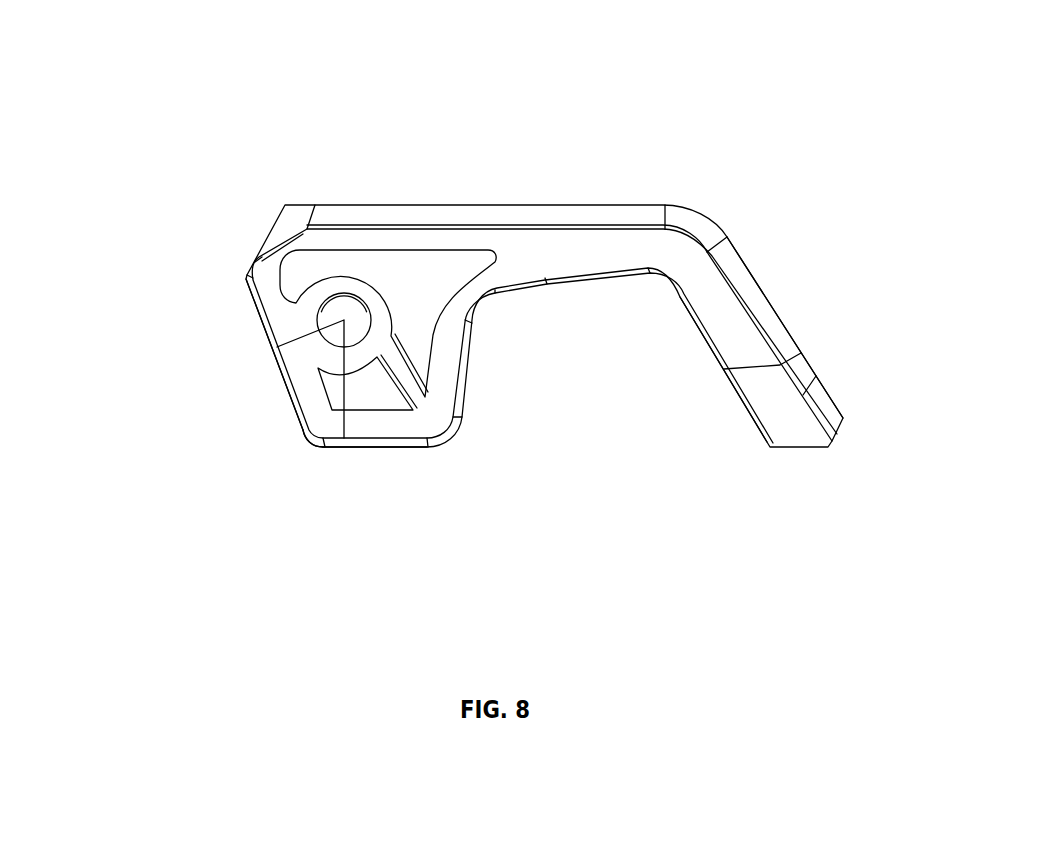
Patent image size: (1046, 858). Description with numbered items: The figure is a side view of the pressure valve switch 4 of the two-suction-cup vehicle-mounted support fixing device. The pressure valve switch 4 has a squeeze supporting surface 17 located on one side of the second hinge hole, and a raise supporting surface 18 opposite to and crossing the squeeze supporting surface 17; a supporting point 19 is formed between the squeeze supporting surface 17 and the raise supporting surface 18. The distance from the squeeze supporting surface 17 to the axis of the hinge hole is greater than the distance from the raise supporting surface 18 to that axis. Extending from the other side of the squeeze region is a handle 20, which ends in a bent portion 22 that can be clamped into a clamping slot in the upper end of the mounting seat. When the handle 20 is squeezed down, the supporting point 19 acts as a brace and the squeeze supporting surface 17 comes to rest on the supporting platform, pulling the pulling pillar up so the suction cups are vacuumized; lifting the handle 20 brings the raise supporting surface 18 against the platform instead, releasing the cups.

The pressure valve switch 4 is at (170, 116).
The squeeze supporting surface 17 is at (352, 507).
The raise supporting surface 18 is at (225, 405).
The supporting point 19 is at (258, 481).
The handle 20 is at (804, 274).
The bent portion 22 is at (634, 365).